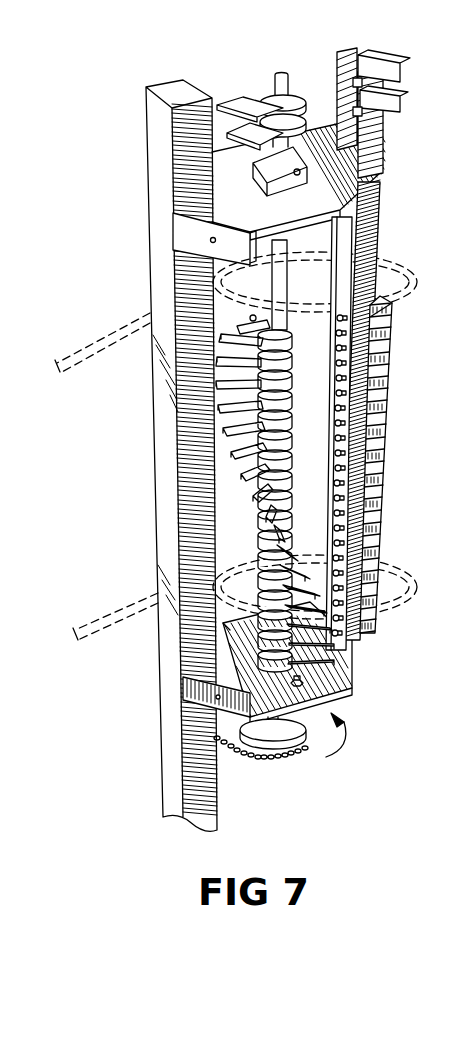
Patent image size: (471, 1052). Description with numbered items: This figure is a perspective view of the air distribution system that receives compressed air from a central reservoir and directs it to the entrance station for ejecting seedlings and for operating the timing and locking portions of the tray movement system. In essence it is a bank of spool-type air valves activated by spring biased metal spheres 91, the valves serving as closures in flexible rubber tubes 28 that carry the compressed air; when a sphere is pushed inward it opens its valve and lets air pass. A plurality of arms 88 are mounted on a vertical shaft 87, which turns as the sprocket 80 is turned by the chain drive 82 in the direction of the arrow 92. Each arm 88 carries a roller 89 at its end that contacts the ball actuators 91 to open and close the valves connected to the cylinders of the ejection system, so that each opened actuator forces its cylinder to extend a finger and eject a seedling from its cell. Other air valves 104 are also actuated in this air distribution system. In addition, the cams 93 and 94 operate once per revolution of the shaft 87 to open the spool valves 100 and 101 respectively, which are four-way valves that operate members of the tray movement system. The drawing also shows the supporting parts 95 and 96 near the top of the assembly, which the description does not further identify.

The flexible rubber tubes 28 is at (95, 617).
The sprocket 80 is at (300, 748).
The chain drive 82 is at (235, 748).
The vertical shaft 87 is at (281, 287).
The arms 88 is at (262, 418).
The roller 89 is at (252, 316).
The spring biased metal spheres 91 is at (334, 318).
The arrow 92 is at (348, 730).
The cam 93 is at (255, 100).
The cam 94 is at (247, 137).
The bracket 95 is at (350, 52).
The fasteners 96 is at (350, 98).
The spool valve 100 is at (400, 67).
The spool valve 101 is at (403, 93).
The air valves 104 is at (393, 354).